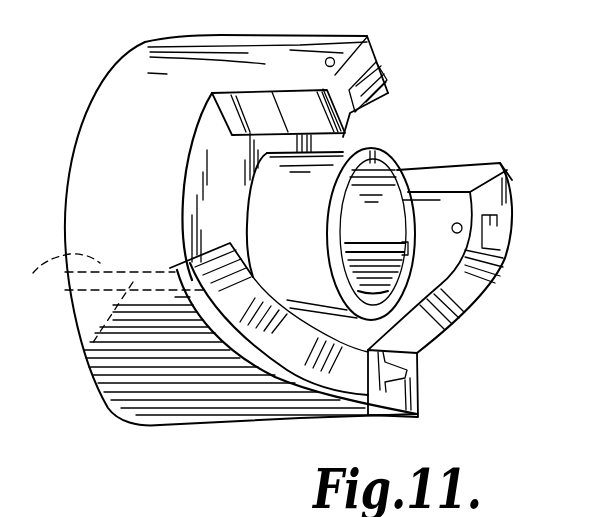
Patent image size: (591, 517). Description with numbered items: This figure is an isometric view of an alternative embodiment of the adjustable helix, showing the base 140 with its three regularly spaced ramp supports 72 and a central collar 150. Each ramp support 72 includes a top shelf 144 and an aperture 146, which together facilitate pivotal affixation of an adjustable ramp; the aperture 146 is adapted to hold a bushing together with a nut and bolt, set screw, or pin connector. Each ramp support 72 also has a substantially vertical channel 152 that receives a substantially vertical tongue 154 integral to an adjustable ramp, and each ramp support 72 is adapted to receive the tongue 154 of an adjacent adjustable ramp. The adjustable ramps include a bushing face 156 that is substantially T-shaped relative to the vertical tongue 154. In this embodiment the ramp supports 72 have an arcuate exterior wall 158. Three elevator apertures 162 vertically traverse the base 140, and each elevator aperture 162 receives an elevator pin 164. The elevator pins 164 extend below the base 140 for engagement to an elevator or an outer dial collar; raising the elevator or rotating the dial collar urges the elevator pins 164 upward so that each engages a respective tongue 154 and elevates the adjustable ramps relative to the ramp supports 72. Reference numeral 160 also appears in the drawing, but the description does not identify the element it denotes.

The ramp support 72 is at (125, 60).
The base 140 is at (140, 377).
The top shelf 144 is at (357, 113).
The aperture 146 is at (334, 59).
The central collar 150 is at (370, 157).
The vertical channel 152 is at (417, 355).
The vertical tongue 154 is at (490, 237).
The bushing face 156 is at (347, 340).
The arcuate exterior wall 158 is at (277, 427).
The shoulder 160 is at (246, 374).
The elevator aperture 162 is at (60, 275).
The elevator pin 164 is at (88, 352).